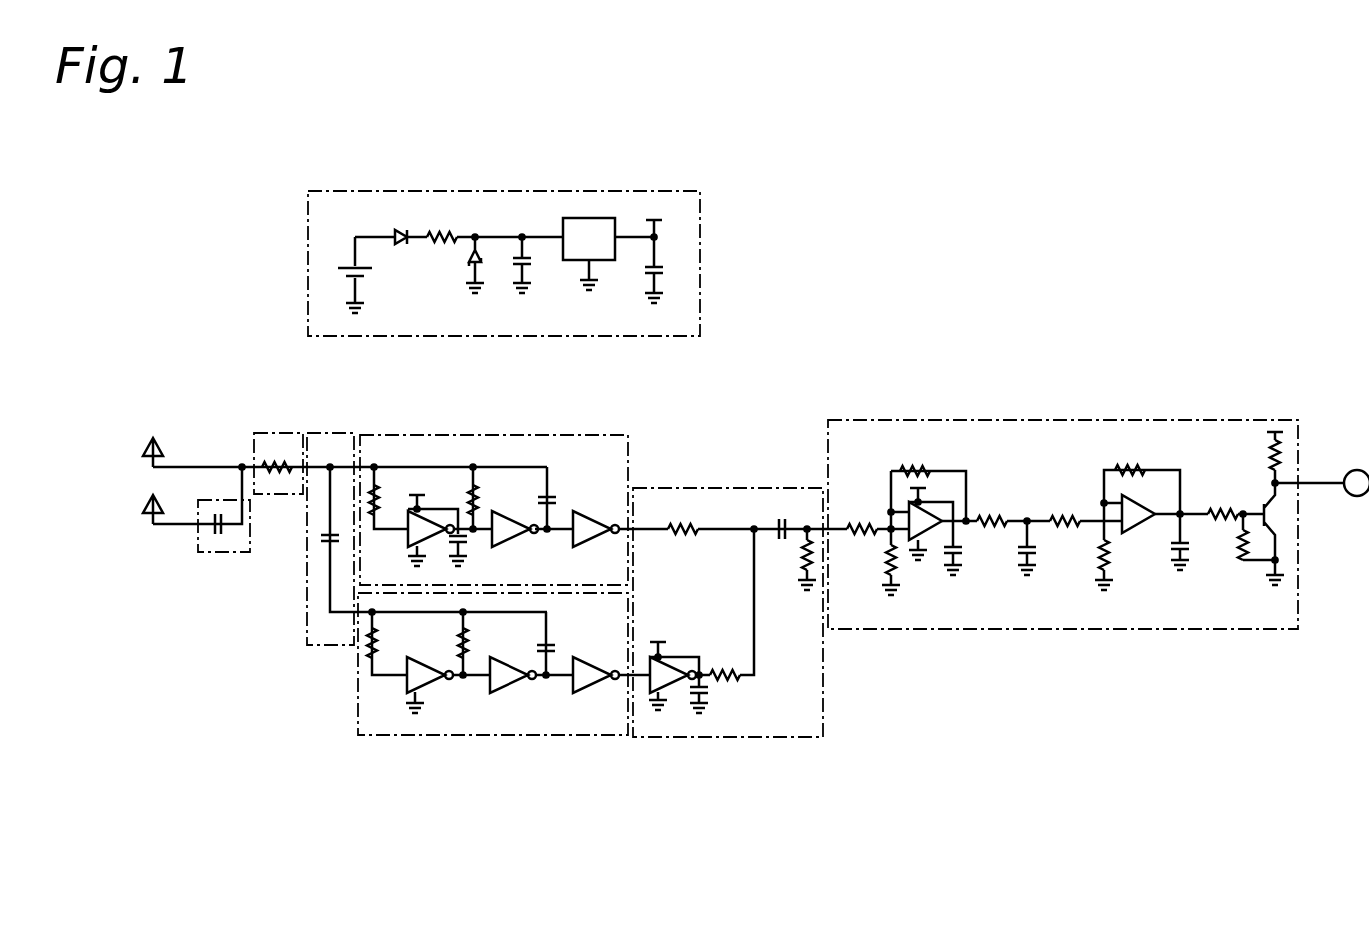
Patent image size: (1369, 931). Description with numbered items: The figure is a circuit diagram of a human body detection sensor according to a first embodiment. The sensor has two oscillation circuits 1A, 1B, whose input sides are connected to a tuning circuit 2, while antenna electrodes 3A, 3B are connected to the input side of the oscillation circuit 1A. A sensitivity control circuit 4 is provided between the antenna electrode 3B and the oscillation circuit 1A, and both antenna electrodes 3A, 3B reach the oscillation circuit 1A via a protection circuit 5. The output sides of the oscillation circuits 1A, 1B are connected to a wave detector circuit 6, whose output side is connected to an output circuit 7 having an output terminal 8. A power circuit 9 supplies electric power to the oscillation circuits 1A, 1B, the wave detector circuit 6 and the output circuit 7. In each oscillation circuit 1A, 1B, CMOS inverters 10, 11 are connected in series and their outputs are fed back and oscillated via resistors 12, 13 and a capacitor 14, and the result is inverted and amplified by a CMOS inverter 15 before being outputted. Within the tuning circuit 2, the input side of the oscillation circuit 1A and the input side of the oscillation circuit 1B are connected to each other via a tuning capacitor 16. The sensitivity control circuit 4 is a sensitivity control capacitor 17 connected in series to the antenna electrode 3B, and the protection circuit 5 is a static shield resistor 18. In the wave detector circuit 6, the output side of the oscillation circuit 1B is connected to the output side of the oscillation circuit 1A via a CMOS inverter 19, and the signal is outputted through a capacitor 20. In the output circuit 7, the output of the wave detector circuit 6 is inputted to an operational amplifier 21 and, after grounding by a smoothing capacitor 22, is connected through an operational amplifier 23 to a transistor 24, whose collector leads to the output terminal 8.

The oscillation circuit 1A is at (415, 435).
The oscillation circuit 1B is at (413, 735).
The tuning circuit 2 is at (338, 433).
The antenna electrode 3A is at (148, 440).
The antenna electrode 3B is at (148, 520).
The sensitivity control circuit 4 is at (226, 552).
The protection circuit 5 is at (283, 433).
The wave detector circuit 6 is at (690, 488).
The output circuit 7 is at (895, 420).
The output terminal 8 is at (1348, 472).
The power circuit 9 is at (307, 225).
The CMOS inverter 10 is at (410, 540).
The CMOS inverter 11 is at (505, 540).
The resistor 12 is at (378, 495).
The resistor 13 is at (477, 500).
The capacitor 14 is at (550, 500).
The CMOS inverter 15 is at (590, 540).
The tuning capacitor 16 is at (318, 545).
The sensitivity control capacitor 17 is at (212, 533).
The static shield resistor 18 is at (282, 475).
The CMOS inverter 19 is at (672, 656).
The capacitor 20 is at (780, 540).
The operational amplifier 21 is at (932, 545).
The smoothing capacitor 22 is at (1018, 556).
The operational amplifier 23 is at (1140, 533).
The transistor 24 is at (1262, 508).